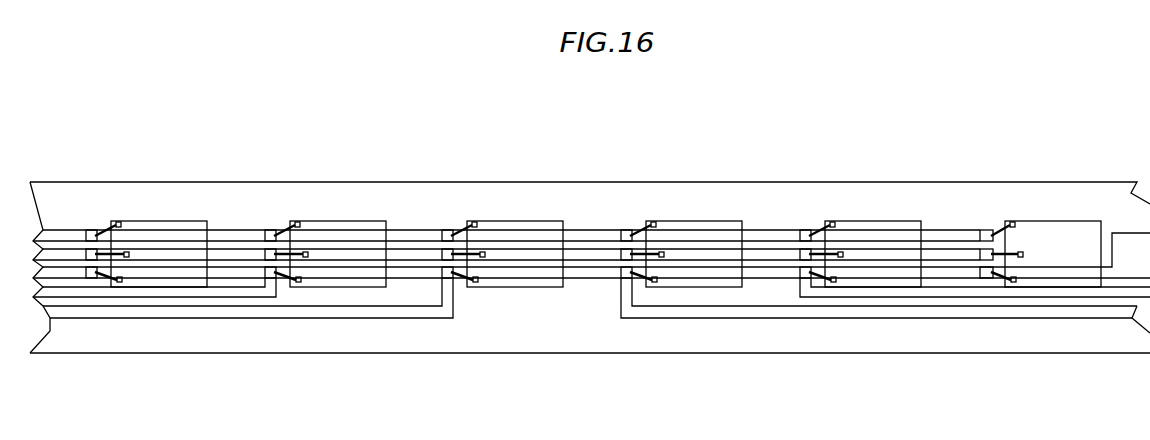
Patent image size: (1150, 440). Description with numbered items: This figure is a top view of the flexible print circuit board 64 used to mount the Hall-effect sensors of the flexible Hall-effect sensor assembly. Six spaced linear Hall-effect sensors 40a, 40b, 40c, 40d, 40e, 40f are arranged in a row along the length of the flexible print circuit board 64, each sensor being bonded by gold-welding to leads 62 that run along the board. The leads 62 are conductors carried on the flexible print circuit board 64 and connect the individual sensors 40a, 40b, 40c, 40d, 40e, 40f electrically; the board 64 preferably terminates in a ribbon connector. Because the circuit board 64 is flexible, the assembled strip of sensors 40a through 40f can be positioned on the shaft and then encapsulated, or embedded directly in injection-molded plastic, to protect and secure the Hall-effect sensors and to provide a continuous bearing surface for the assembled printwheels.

The linear Hall-effect sensor 40a is at (165, 221).
The linear Hall-effect sensor 40b is at (357, 221).
The linear Hall-effect sensor 40c is at (517, 221).
The linear Hall-effect sensor 40d is at (692, 221).
The linear Hall-effect sensor 40e is at (870, 221).
The linear Hall-effect sensor 40f is at (1050, 221).
The leads 62 is at (398, 317).
The flexible print circuit board 64 is at (323, 170).